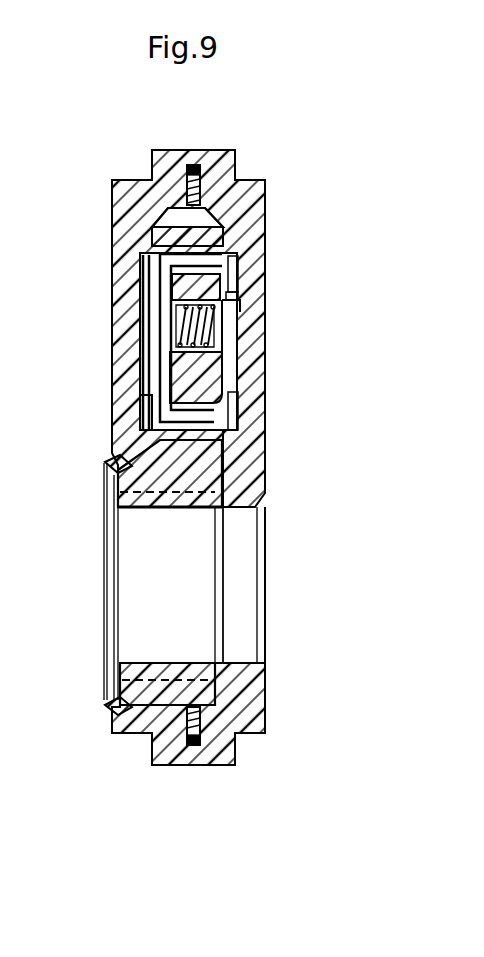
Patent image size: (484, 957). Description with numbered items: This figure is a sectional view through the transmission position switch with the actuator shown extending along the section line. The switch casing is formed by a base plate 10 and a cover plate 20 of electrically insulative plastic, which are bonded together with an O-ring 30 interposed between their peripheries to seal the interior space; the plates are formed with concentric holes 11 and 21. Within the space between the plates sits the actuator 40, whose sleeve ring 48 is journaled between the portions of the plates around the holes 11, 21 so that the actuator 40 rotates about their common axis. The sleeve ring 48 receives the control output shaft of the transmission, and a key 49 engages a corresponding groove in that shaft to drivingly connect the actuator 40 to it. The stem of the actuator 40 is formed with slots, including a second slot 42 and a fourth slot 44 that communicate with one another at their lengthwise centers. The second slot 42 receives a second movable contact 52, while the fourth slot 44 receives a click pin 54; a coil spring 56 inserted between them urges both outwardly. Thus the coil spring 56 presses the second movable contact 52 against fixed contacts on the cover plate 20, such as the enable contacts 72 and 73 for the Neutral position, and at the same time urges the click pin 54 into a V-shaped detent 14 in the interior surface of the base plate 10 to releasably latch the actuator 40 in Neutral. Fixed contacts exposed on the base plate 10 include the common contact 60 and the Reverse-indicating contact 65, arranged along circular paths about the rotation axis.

The base plate 10 is at (266, 191).
The cover plate 20 is at (111, 180).
The O-ring 30 is at (188, 164).
The second slot 42 is at (178, 268).
The enable contact 73 is at (142, 284).
The coil spring 56 is at (223, 336).
The fixed contact 65 is at (233, 270).
The fourth slot 44 is at (233, 294).
The detent 14 is at (229, 302).
The click pin 54 is at (224, 333).
The common contact 60 is at (235, 403).
The enable contact 72 is at (141, 400).
The second movable contact 52 is at (142, 408).
The actuator 40 is at (196, 454).
The hole 21 is at (115, 492).
The key 49 is at (182, 508).
The hole 11 is at (245, 570).
The sleeve ring 48 is at (187, 682).